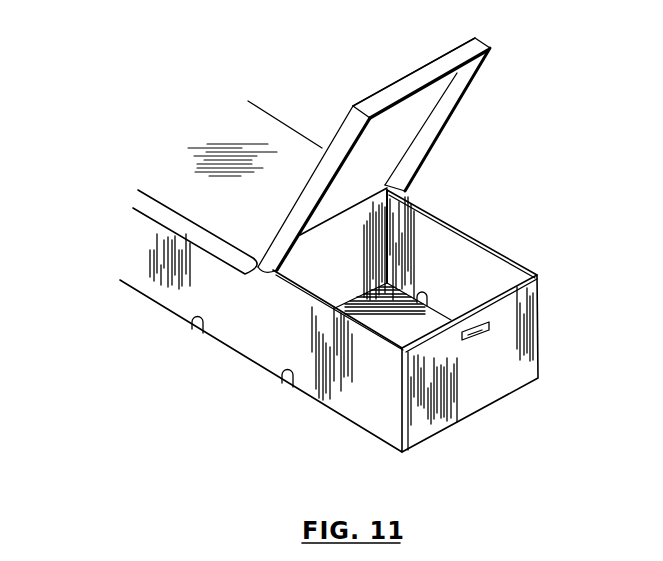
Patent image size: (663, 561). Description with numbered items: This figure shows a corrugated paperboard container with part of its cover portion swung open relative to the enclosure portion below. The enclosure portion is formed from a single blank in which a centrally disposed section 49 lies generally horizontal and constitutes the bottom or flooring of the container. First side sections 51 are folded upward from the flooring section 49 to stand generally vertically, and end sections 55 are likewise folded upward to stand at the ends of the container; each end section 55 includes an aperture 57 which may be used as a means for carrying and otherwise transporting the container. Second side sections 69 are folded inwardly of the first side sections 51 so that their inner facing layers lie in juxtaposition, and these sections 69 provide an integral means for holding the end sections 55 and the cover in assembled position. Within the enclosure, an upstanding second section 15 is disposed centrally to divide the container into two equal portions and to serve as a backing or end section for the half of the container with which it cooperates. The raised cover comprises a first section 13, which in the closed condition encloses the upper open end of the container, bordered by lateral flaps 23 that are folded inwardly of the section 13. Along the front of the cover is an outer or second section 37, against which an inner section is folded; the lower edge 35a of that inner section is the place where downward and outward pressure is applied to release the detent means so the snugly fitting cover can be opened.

The first sections 13 is at (339, 155).
The second sections 15 is at (343, 244).
The lateral flaps 23 is at (348, 128).
The lower edge of the section 35a is at (404, 98).
The outer or second section 37 is at (428, 70).
The centrally disposed section 49 is at (393, 309).
The first side sections 51 is at (264, 343).
The end sections 55 is at (485, 390).
The apertures 57 is at (470, 338).
The second side sections 69 is at (462, 245).